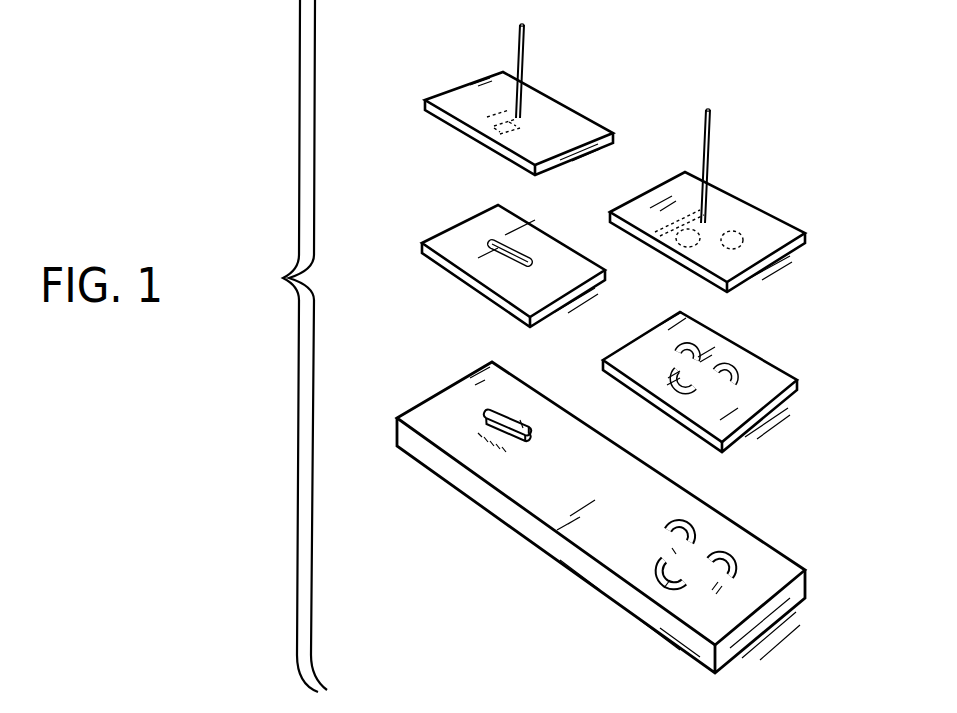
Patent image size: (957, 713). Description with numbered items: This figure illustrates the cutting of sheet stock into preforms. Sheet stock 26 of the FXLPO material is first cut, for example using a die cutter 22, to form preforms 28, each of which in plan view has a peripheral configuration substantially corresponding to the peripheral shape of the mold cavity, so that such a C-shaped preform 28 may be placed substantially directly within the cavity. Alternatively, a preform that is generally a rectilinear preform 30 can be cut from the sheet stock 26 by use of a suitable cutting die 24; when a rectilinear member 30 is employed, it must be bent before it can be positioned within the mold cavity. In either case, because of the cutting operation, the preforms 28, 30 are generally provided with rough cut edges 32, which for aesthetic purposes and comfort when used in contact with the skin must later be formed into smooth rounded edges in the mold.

The die cutter 22 is at (740, 215).
The cutting die 24 is at (560, 113).
The sheet stock 26 is at (462, 250).
The preform 28 is at (735, 560).
The rectilinear preform 30 is at (520, 450).
The rough cut edges 32 is at (480, 443).